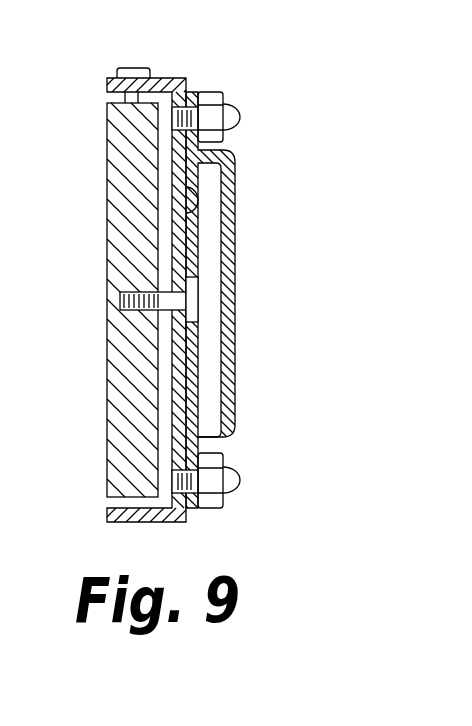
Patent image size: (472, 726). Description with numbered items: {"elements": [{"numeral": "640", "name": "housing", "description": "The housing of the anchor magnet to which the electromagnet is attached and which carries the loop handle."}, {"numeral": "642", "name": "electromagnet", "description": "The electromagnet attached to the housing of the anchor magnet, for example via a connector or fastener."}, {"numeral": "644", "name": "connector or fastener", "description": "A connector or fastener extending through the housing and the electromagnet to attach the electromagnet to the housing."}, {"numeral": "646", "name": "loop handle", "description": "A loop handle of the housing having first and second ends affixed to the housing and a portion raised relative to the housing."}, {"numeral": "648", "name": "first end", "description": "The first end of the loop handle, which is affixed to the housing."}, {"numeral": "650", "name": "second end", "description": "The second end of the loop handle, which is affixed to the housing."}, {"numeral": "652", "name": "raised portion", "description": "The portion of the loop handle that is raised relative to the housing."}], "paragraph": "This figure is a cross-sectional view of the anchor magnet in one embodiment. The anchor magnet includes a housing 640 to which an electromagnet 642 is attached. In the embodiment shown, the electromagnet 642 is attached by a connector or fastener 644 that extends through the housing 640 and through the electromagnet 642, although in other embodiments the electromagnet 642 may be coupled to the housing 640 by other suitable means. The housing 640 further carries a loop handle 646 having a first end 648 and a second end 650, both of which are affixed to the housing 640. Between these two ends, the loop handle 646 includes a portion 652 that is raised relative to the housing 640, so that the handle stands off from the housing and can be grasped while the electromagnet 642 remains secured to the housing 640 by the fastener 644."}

The frame 640 is at (162, 80).
The panel block 642 is at (115, 202).
The bolt 644 is at (199, 305).
The mounting assembly 646 is at (244, 300).
The nut 648 is at (240, 121).
The nut 650 is at (240, 482).
The bracket 652 is at (233, 376).